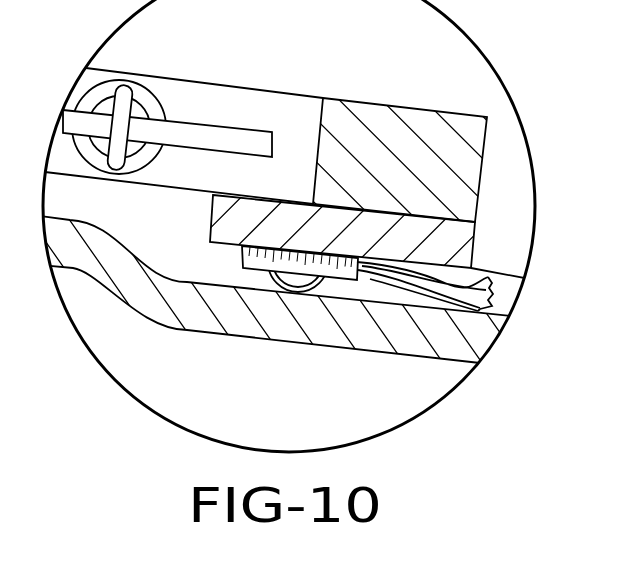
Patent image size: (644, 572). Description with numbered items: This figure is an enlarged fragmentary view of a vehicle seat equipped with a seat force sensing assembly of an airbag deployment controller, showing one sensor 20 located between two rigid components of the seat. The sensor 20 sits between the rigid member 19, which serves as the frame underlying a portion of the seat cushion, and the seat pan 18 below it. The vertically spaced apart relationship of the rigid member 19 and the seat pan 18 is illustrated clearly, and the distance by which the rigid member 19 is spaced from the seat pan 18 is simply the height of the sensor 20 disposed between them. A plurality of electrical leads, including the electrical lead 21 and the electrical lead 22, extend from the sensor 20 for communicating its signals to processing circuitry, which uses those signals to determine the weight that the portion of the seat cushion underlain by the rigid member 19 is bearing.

The seat pan 18 is at (190, 312).
The rigid member 19 is at (390, 117).
The sensor 20 is at (298, 284).
The electrical lead 21 is at (384, 274).
The electrical lead 22 is at (461, 289).